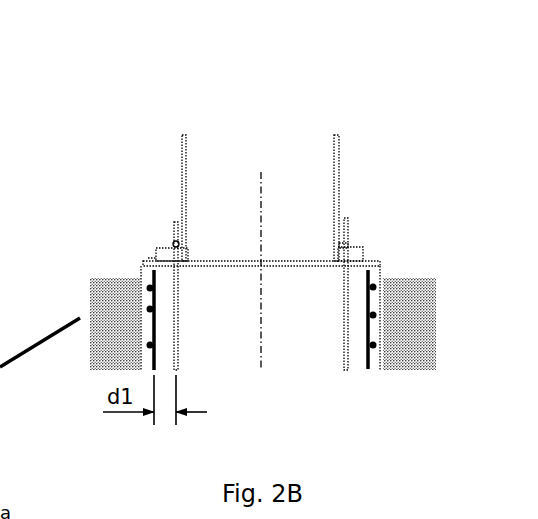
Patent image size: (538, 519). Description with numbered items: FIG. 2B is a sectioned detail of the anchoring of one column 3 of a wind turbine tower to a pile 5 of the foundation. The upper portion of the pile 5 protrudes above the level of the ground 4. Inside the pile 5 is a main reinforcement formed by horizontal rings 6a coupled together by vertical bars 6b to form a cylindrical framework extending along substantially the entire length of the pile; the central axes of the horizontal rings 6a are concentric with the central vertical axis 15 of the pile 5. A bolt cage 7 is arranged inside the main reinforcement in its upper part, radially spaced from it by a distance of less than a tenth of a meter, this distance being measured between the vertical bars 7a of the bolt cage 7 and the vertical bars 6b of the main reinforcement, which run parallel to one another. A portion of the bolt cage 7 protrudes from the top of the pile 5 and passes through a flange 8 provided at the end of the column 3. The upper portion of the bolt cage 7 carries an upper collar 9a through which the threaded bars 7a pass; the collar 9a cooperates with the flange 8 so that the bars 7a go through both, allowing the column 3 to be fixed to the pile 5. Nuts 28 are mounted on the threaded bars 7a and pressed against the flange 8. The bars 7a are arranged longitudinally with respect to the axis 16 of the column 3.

The tower column 3 is at (262, 118).
The ground 4 is at (398, 278).
The pile 5 is at (295, 387).
The horizontal ring 6a is at (148, 312).
The vertical bar 6b is at (154, 271).
The bolt cage 7 is at (175, 219).
The vertical bar 7a is at (177, 333).
The flange 8 is at (160, 249).
The upper collar 9a is at (365, 262).
The central vertical axis 15 is at (260, 360).
The axis 16 is at (260, 220).
The nut 28 is at (347, 245).